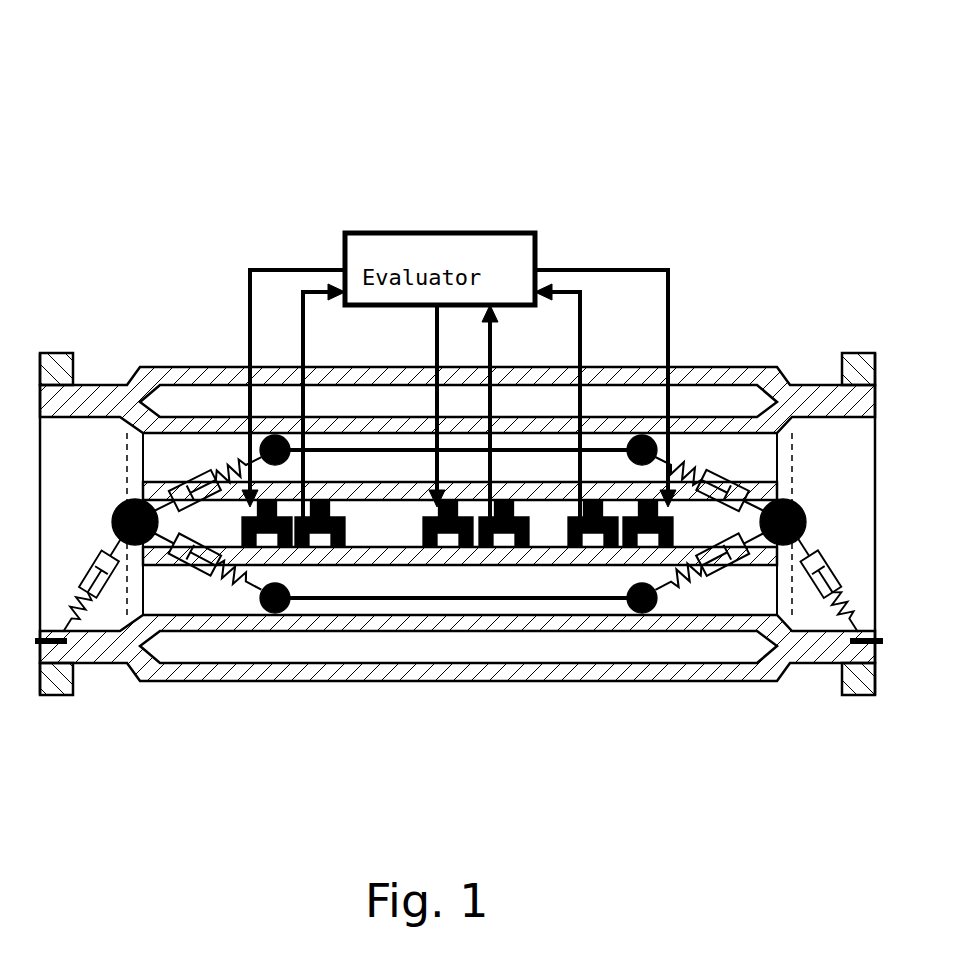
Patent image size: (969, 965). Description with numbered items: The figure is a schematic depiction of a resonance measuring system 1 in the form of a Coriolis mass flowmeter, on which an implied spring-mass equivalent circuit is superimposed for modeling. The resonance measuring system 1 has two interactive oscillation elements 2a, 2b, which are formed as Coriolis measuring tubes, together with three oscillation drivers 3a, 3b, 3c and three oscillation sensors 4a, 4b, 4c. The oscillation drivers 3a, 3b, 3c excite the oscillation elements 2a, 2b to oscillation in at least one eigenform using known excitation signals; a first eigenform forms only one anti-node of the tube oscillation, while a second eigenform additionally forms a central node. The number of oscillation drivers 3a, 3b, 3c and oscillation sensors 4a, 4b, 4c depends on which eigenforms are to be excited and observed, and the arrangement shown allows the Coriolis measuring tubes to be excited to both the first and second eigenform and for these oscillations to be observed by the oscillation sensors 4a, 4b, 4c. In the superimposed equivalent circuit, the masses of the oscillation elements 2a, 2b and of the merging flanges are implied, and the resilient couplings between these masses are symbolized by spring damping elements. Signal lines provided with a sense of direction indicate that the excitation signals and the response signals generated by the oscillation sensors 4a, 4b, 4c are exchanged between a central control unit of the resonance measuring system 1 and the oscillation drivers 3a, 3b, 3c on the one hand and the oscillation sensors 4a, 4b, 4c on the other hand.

The resonance measuring system 1 is at (168, 172).
The oscillation element 2a is at (578, 478).
The oscillation element 2b is at (542, 553).
The oscillation driver 3a is at (250, 548).
The oscillation driver 3b is at (683, 547).
The oscillation driver 3c is at (417, 542).
The oscillation sensor 4a is at (338, 542).
The oscillation sensor 4b is at (605, 547).
The oscillation sensor 4c is at (483, 545).